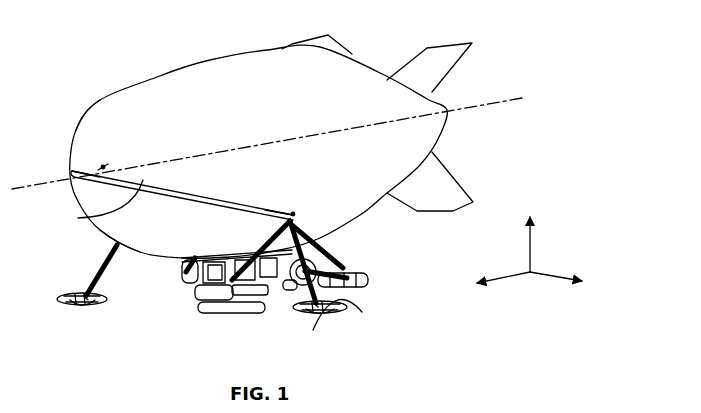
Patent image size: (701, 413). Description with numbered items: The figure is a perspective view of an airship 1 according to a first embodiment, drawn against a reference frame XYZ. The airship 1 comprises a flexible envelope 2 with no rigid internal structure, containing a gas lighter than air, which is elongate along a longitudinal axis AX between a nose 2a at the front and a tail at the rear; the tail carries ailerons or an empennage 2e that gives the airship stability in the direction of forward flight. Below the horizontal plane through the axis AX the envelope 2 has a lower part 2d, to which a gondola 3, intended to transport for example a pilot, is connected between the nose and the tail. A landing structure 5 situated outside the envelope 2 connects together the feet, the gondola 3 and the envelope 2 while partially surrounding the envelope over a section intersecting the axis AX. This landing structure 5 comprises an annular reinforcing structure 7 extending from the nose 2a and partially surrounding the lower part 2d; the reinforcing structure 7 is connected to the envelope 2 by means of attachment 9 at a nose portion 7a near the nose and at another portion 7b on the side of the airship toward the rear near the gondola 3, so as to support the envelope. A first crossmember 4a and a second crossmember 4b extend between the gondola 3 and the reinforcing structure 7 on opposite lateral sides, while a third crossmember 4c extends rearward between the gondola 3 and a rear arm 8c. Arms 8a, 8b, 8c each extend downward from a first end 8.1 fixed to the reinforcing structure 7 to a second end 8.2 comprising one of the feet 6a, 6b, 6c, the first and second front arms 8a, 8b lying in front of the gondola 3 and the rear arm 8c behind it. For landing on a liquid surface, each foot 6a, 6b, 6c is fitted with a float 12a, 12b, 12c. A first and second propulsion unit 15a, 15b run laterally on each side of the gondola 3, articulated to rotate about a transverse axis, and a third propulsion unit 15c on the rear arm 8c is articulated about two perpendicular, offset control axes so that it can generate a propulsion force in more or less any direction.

The airship 1 is at (74, 57).
The flexible envelope 2 is at (200, 73).
The nose 2a is at (100, 130).
The lower part 2d is at (177, 249).
The empennage 2e is at (437, 58).
The longitudinal axis AX is at (505, 98).
The gondola 3 is at (213, 293).
The first crossmember 4a is at (236, 276).
The second crossmember 4b is at (193, 260).
The third crossmember 4c is at (276, 240).
The landing structure 5 is at (125, 327).
The first foot 6a is at (317, 315).
The second foot 6b is at (82, 307).
The third foot 6c is at (358, 287).
The reinforcing structure 7 is at (90, 221).
The nose portion 7a is at (93, 174).
The side portion of the reinforcing structure 7b is at (285, 211).
The first end 8.1 is at (302, 229).
The second end 8.2 is at (80, 294).
The first front arm 8a is at (340, 233).
The second front arm 8b is at (100, 268).
The rear arm 8c is at (345, 263).
The means of attachment 9 is at (103, 167).
The float 12a is at (336, 316).
The float 12b is at (60, 302).
The float 12c is at (372, 277).
The first propulsion unit 15a is at (290, 293).
The second propulsion unit 15b is at (187, 287).
The third propulsion unit 15c is at (340, 252).
The coordinate system XYZ is at (528, 246).